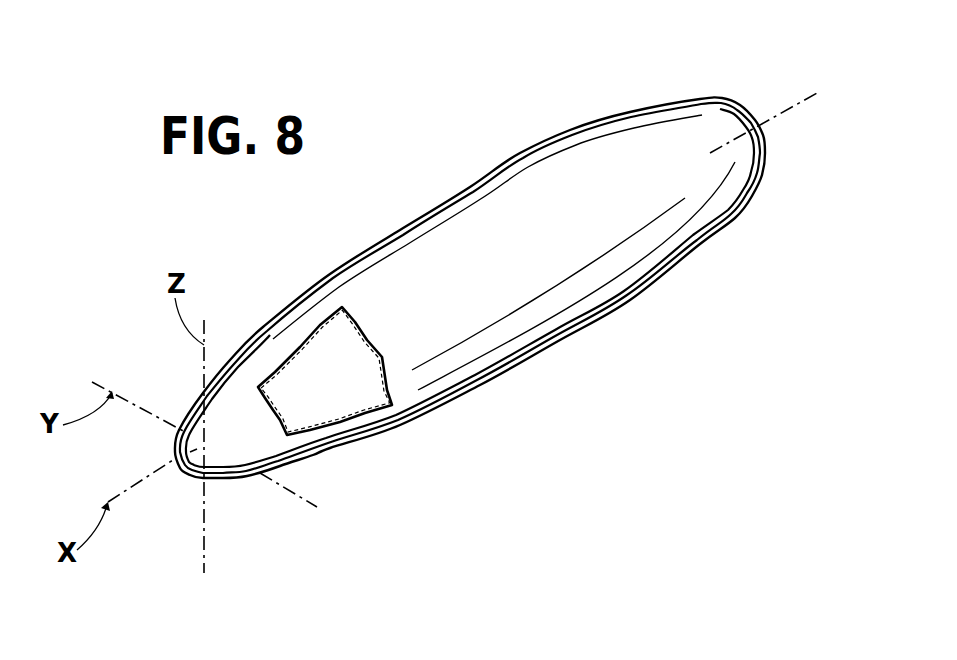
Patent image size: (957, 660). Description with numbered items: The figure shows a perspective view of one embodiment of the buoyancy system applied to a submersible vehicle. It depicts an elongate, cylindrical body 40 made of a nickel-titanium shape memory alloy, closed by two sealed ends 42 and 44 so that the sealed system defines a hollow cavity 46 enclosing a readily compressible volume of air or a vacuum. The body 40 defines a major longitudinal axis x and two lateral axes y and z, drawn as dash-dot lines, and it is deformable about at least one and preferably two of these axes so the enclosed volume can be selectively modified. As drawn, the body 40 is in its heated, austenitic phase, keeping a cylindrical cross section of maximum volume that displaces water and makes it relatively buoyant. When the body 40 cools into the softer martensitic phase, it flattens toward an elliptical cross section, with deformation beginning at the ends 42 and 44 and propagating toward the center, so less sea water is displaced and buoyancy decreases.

The body 40 is at (588, 145).
The sealed end 42 is at (737, 108).
The sealed end 44 is at (187, 473).
The hollow cavity 46 is at (342, 397).